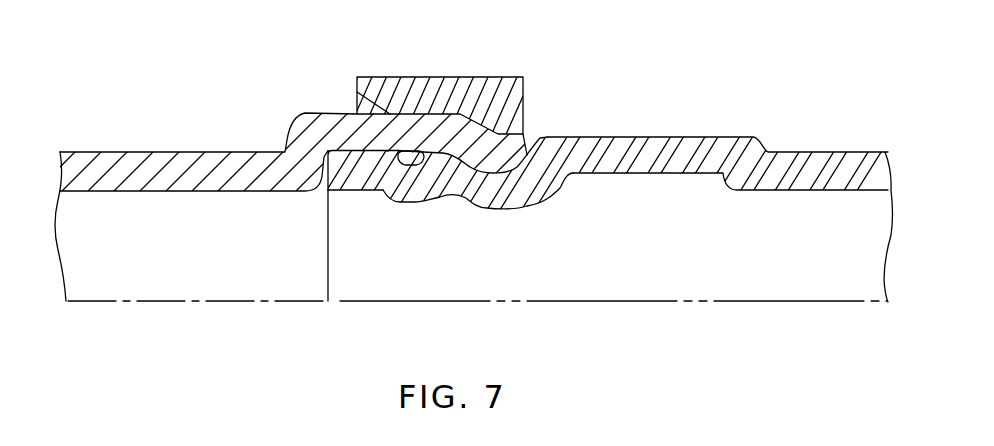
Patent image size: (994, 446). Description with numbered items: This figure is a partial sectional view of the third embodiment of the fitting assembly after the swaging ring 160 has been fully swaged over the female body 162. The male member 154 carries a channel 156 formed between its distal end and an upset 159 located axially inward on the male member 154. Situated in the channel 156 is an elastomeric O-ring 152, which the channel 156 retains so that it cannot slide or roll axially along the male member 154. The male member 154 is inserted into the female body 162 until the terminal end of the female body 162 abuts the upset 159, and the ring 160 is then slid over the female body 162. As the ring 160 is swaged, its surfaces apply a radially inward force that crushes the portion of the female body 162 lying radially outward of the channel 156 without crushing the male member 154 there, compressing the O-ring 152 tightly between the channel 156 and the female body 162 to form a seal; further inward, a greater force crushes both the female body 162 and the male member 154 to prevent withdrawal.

The O-ring 152 is at (414, 167).
The male member 154 is at (447, 167).
The channel 156 is at (396, 158).
The upset 159 is at (637, 137).
The swaging ring 160 is at (445, 78).
The female body 162 is at (327, 113).